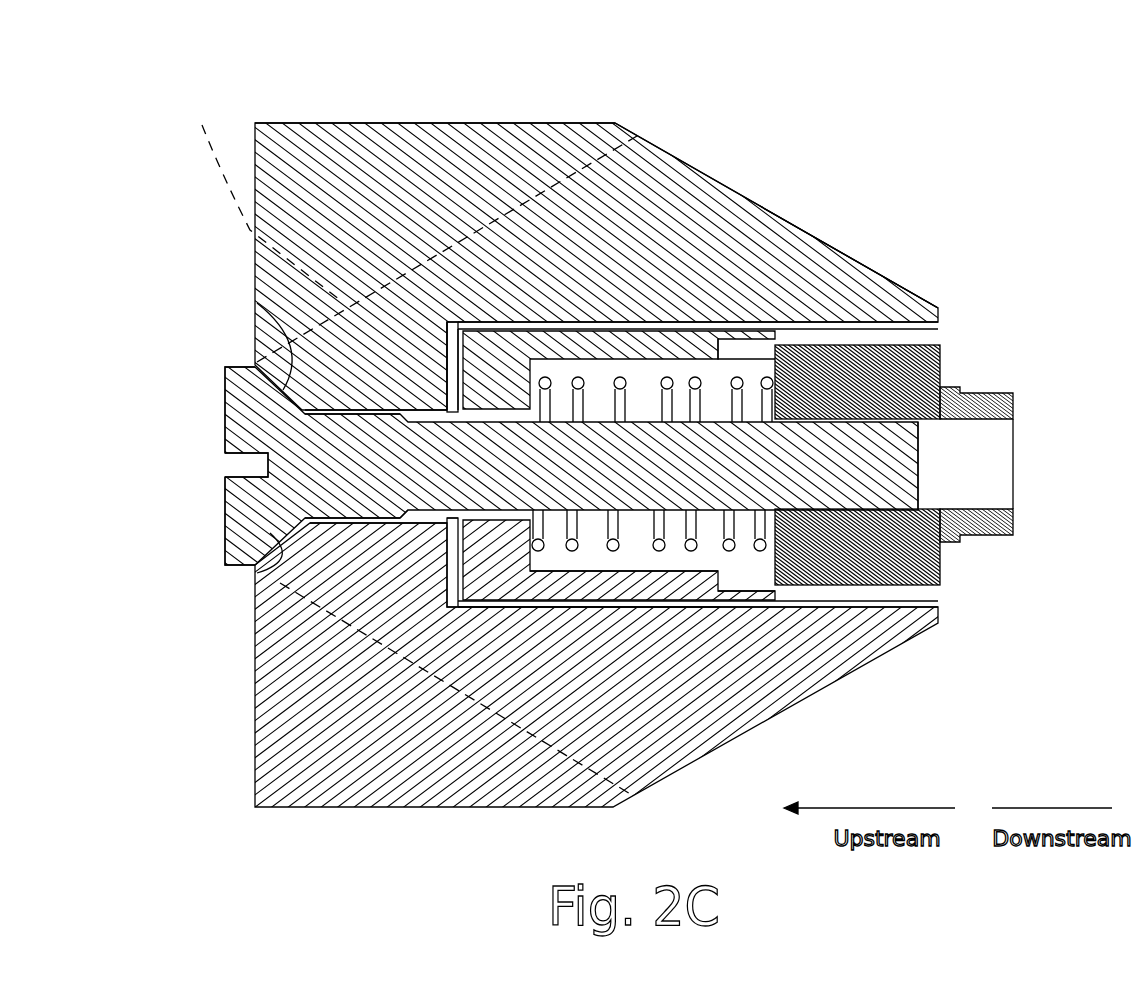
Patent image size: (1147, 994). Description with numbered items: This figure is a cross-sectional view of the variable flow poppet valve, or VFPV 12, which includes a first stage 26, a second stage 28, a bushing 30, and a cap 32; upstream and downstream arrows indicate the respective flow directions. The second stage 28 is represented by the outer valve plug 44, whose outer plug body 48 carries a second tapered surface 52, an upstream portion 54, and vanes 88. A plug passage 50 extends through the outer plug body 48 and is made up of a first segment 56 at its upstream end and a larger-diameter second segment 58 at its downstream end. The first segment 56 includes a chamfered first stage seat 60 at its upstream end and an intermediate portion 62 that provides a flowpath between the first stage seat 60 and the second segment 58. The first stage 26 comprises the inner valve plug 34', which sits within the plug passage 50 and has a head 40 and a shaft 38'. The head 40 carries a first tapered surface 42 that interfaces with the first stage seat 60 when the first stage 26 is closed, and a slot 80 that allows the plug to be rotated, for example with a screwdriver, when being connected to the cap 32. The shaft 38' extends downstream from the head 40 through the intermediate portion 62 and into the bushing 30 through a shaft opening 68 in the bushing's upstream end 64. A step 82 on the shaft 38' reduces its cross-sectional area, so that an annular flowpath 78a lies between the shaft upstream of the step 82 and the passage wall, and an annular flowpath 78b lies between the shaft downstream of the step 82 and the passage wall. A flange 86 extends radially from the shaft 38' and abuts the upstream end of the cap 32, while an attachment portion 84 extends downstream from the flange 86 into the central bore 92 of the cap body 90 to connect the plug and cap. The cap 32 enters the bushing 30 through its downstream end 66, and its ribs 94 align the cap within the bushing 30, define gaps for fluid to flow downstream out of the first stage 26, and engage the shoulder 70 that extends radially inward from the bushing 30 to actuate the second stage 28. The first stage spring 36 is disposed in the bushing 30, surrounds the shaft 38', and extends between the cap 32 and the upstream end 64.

The variable flow poppet valve 12 is at (766, 66).
The first stage 26 is at (353, 520).
The second stage 28 is at (677, 83).
The bushing 30 is at (700, 590).
The cap 32 is at (943, 538).
The inner valve plug 34' is at (353, 241).
The first stage spring 36 is at (737, 588).
The shaft 38' is at (420, 695).
The head 40 is at (240, 380).
The first tapered surface 42 is at (268, 575).
The outer valve plug 44 is at (758, 206).
The outer plug body 48 is at (583, 226).
The plug passage 50 is at (669, 618).
The second tapered surface 52 is at (870, 272).
The upstream portion 54 is at (408, 443).
The first segment 56 is at (447, 475).
The second segment 58 is at (456, 527).
The first stage seat 60 is at (257, 303).
The intermediate portion 62 is at (363, 413).
The upstream end 64 is at (490, 570).
The downstream end 66 is at (932, 597).
The shaft opening 68 is at (503, 407).
The shoulder 70 is at (720, 356).
The annular flowpath 78a is at (378, 530).
The annular flowpath 78b is at (456, 410).
The slot 80 is at (225, 465).
The step 82 is at (413, 418).
The attachment portion 84 is at (877, 487).
The flange 86 is at (772, 550).
The vanes 88 is at (300, 120).
The cap body 90 is at (940, 395).
The central bore 92 is at (987, 456).
The ribs 94 is at (921, 356).